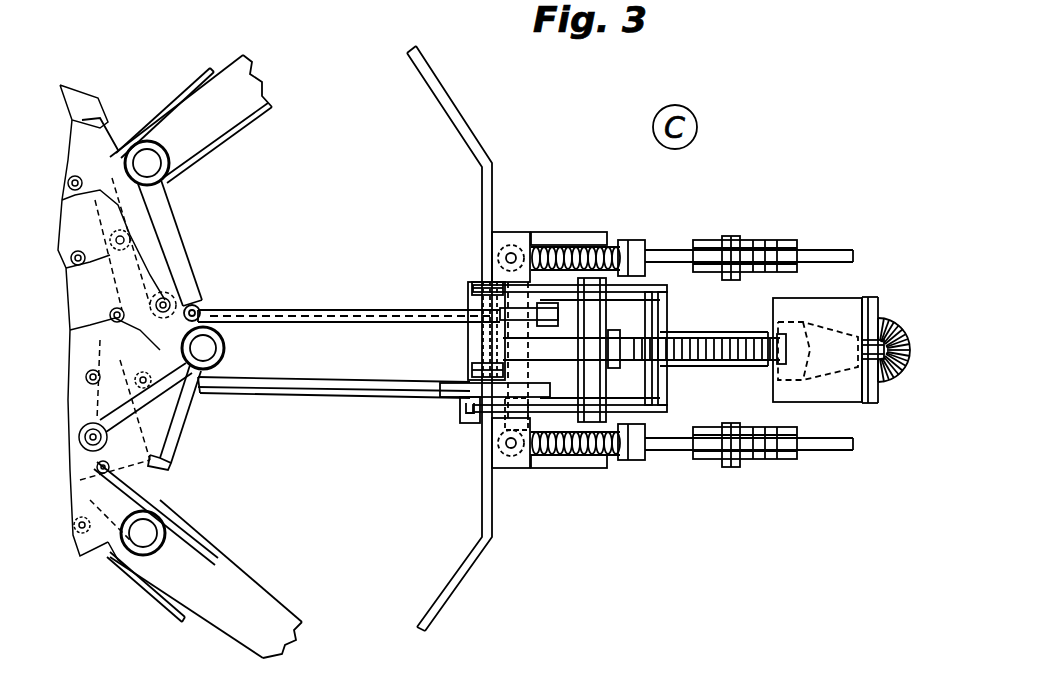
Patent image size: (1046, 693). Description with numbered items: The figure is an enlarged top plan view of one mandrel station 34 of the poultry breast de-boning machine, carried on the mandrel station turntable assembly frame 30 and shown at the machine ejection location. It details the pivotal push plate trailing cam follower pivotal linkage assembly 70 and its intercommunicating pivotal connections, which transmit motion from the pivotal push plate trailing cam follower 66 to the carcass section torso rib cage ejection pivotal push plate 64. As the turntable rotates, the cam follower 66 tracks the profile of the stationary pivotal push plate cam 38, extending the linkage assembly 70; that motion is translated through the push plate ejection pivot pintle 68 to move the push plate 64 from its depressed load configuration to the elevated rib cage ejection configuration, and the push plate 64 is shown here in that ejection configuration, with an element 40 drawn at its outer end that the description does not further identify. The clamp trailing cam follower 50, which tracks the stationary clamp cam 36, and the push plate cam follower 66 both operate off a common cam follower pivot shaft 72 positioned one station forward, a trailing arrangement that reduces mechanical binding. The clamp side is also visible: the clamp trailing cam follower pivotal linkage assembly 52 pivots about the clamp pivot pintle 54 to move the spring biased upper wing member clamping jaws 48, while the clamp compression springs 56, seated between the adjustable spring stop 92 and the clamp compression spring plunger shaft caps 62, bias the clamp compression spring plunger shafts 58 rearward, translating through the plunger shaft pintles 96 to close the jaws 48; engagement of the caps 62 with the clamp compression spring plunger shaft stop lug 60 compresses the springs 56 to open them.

The mandrel station turntable assembly frame 30 is at (476, 141).
The mandrel station 34 is at (742, 132).
The stationary clamp cam 36 is at (182, 197).
The stationary pivotal push plate cam 38 is at (158, 257).
The rotary brush 40 is at (893, 323).
The upper wing member clamping jaws 48 is at (783, 240).
The clamp trailing cam follower 50 is at (203, 172).
The clamp trailing cam follower pivotal linkage assembly 52 is at (420, 415).
The clamp pivot pintle 54 is at (592, 462).
The clamp compression spring 56 is at (573, 244).
The clamp compression spring plunger shaft 58 is at (656, 251).
The clamp compression spring plunger shaft stop lug 60 is at (510, 230).
The clamp compression spring plunger shaft cap 62 is at (500, 260).
The carcass section torso rib cage ejection pivotal push plate 64 is at (833, 302).
The pivotal push plate trailing cam follower 66 is at (100, 122).
The push plate ejection pivot pintle 68 is at (773, 335).
The pivotal push plate trailing cam follower pivotal linkage assembly 70 is at (398, 286).
The cam follower pivot shaft 72 is at (160, 148).
The adjustable spring stop 92 is at (636, 243).
The plunger shaft pintle 96 is at (732, 238).